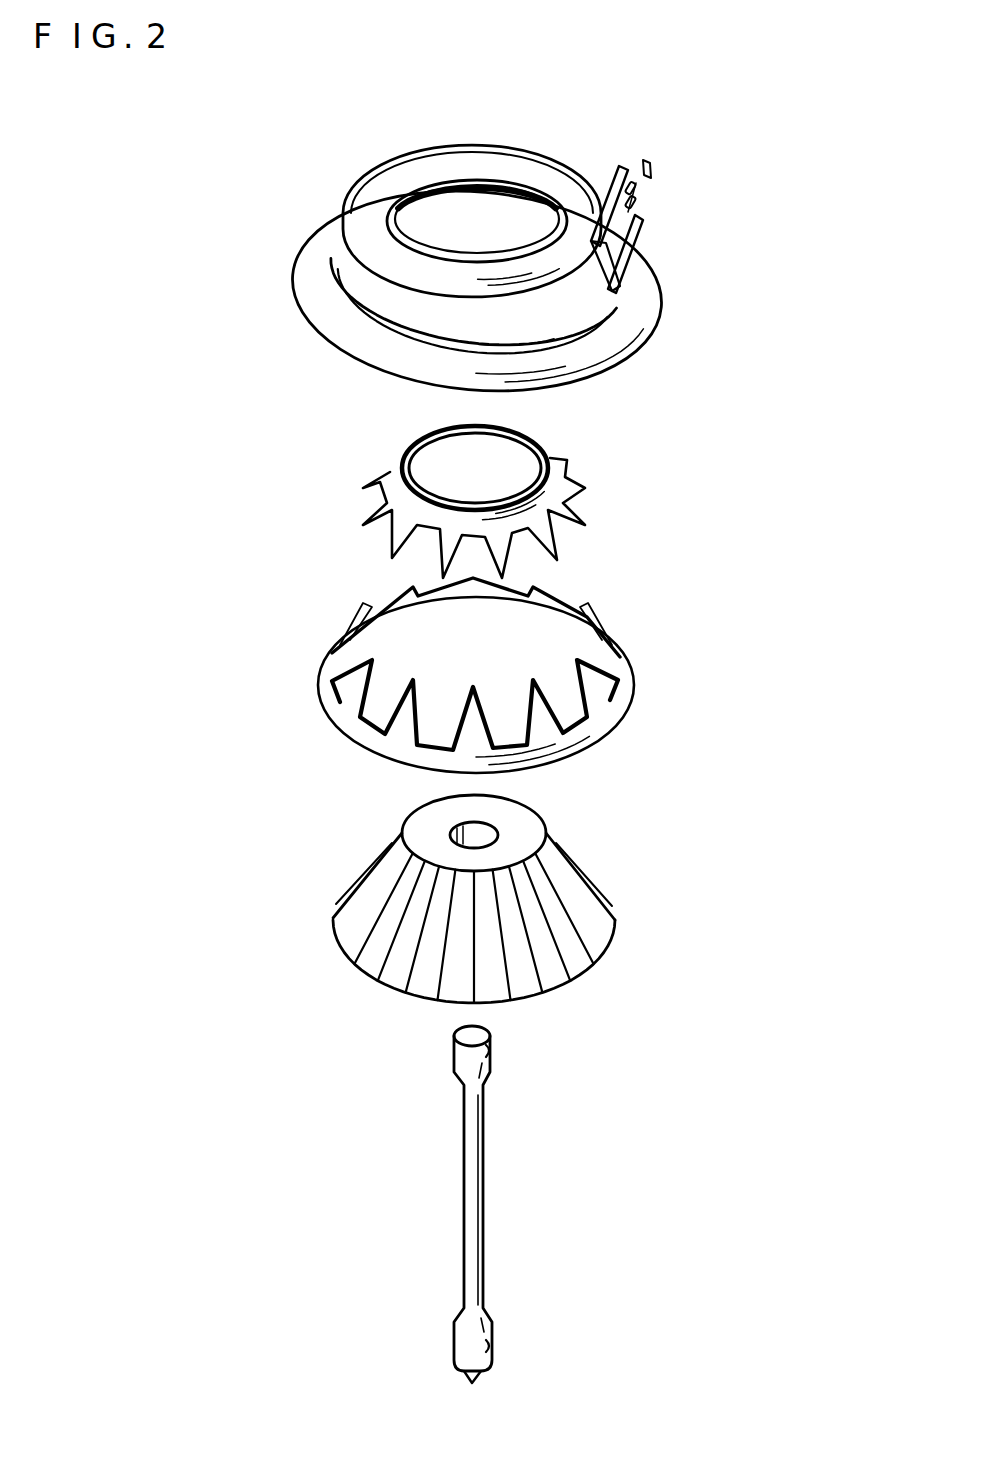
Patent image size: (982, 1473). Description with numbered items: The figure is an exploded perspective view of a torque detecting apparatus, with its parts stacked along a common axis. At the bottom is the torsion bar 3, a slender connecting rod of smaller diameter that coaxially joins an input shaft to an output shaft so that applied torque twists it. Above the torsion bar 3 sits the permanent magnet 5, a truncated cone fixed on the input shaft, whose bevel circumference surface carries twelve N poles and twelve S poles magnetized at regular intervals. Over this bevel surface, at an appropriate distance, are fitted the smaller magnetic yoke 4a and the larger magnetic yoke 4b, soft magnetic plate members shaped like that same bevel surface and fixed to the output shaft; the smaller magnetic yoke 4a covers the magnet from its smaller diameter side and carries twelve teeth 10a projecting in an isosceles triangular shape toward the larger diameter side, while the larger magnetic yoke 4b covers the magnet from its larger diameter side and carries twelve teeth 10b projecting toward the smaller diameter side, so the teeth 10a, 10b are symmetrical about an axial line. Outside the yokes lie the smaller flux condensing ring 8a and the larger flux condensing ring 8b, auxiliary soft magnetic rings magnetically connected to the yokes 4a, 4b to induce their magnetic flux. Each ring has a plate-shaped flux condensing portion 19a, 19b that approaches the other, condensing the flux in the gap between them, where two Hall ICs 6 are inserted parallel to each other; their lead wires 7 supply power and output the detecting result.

The torsion bar 3 is at (475, 1145).
The smaller magnetic yoke 4a is at (496, 497).
The larger magnetic yoke 4b is at (485, 670).
The permanent magnet 5 is at (580, 858).
The Hall ICs 6 is at (630, 185).
The lead wires 7 is at (645, 178).
The smaller flux condensing ring 8a is at (370, 187).
The larger flux condensing ring 8b is at (297, 278).
The teeth of smaller magnetic yoke 10a is at (633, 498).
The teeth of larger magnetic yoke 10b is at (558, 605).
The flux condensing portion of smaller ring 19a is at (600, 196).
The flux condensing portion of larger ring 19b is at (646, 239).